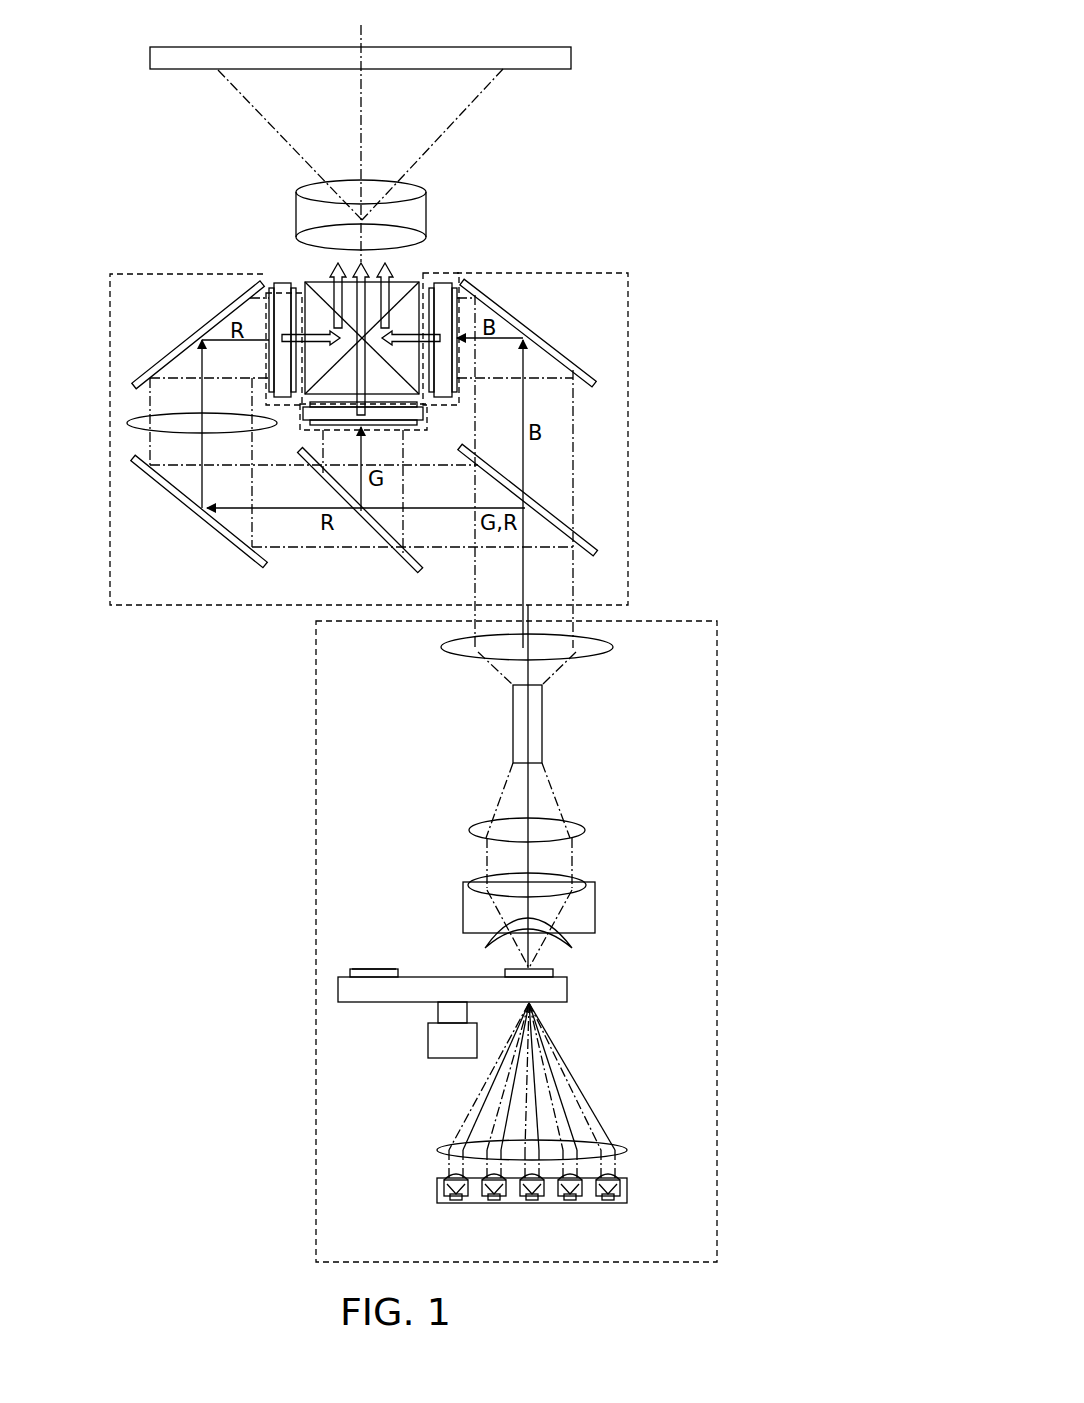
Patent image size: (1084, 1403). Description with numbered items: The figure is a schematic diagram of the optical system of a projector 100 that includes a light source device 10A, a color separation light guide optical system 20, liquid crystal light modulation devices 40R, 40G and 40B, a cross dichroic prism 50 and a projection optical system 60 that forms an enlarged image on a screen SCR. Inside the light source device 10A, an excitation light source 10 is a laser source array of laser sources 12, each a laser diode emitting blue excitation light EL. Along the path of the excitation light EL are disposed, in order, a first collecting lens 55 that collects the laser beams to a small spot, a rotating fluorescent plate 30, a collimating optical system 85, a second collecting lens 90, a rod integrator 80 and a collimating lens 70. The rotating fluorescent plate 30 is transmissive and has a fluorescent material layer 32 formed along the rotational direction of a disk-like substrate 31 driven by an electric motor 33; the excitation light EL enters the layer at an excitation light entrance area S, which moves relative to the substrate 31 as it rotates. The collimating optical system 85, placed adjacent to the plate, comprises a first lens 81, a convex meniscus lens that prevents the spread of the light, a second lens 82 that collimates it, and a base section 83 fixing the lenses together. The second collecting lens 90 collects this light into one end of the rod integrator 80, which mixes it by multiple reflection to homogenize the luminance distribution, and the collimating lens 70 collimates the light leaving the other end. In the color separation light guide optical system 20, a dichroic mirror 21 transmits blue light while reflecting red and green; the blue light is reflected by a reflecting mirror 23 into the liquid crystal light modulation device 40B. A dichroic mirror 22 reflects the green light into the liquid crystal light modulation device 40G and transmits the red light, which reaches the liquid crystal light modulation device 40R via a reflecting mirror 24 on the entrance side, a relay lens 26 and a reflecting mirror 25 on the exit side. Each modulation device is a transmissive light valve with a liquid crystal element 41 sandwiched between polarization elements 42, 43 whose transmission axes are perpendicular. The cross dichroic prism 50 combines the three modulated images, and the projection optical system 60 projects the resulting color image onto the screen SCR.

The projector 100 is at (683, 95).
The screen SCR is at (552, 69).
The projection optical system 60 is at (428, 210).
The cross dichroic prism 50 is at (313, 280).
The liquid crystal light modulation device 40R is at (214, 279).
The polarization element 42 is at (270, 290).
The liquid crystal element 41 is at (283, 283).
The polarization element 43 is at (292, 290).
The liquid crystal light modulation device 40B is at (443, 283).
The liquid crystal light modulation device 40G is at (307, 412).
The color separation light guide optical system 20 is at (627, 308).
The reflecting mirror 25 is at (170, 348).
The reflecting mirror 23 is at (562, 348).
The reflecting mirror 24 is at (223, 545).
The dichroic mirror 22 is at (400, 565).
The dichroic mirror 21 is at (590, 540).
The relay lens 26 is at (130, 422).
The light source device 10A is at (718, 660).
The collimating lens 70 is at (600, 655).
The rod integrator 80 is at (542, 712).
The second collecting lens 90 is at (575, 822).
The collimating optical system 85 is at (602, 910).
The base section 83 is at (531, 906).
The second lens 82 is at (482, 885).
The first lens 81 is at (487, 938).
The rotating fluorescent plate 30 is at (575, 990).
The substrate 31 is at (560, 1002).
The fluorescent material layer 32 is at (377, 970).
The excitation light entrance area S is at (367, 968).
The electric motor 33 is at (435, 1040).
The excitation light EL is at (580, 1092).
The first collecting lens 55 is at (617, 1142).
The excitation light source 10 is at (577, 1215).
The laser source 12 is at (530, 1207).